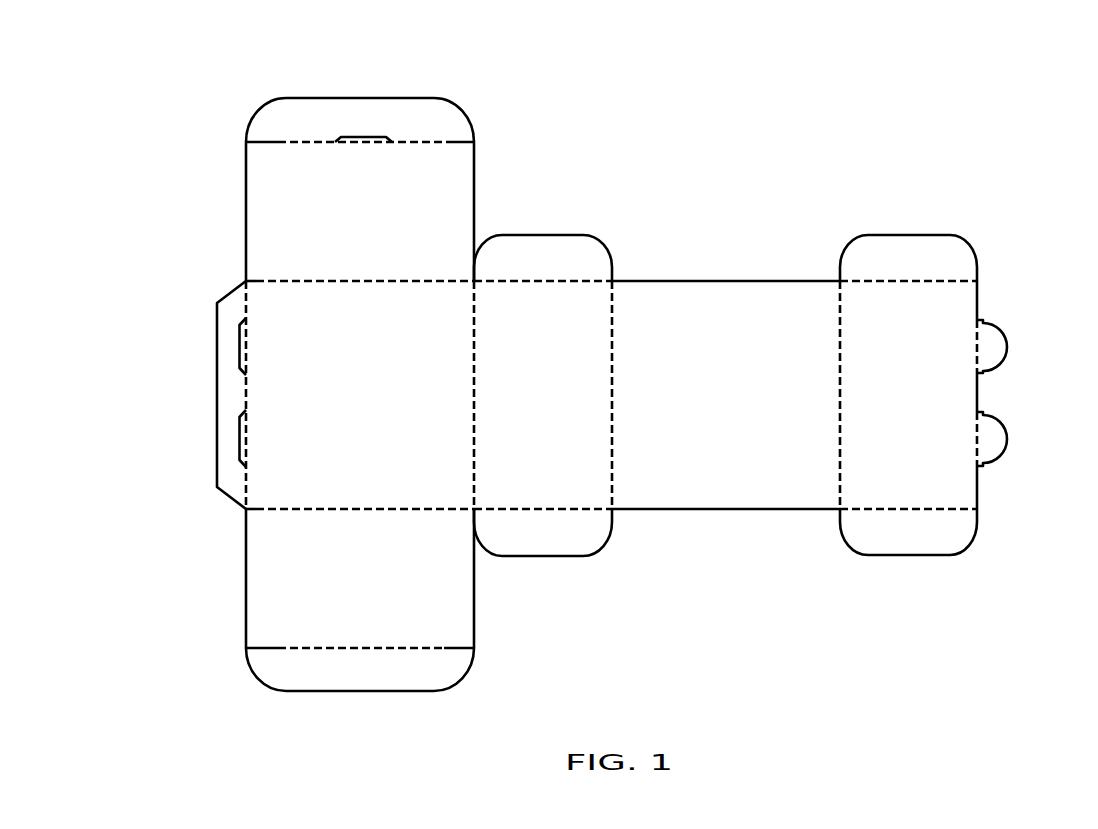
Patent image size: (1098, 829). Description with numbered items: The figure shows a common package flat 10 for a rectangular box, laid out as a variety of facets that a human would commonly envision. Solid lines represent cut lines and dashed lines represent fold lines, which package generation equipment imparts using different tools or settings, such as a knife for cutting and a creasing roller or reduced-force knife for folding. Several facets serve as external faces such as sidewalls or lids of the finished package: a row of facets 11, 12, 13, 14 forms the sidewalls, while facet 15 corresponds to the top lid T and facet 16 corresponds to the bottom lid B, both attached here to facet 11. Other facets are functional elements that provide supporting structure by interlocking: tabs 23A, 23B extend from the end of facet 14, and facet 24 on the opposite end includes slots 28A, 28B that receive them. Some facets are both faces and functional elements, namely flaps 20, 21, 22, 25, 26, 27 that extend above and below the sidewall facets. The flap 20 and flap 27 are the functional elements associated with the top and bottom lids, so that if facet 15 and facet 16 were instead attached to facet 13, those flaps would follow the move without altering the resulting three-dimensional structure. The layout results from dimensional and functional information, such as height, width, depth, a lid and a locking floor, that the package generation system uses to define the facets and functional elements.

The package flat 10 is at (841, 128).
The facet 11 is at (323, 487).
The facet 12 is at (593, 342).
The facet 13 is at (743, 490).
The facet 14 is at (967, 492).
The facet 15 is at (262, 203).
The facet 16 is at (267, 612).
The flap 20 is at (441, 110).
The flap 21 is at (535, 242).
The flap 22 is at (583, 523).
The tab 23A is at (997, 350).
The tab 23B is at (997, 442).
The facet 24 is at (218, 392).
The flap 25 is at (930, 542).
The flap 26 is at (930, 245).
The flap 27 is at (405, 678).
The slot 28A is at (240, 345).
The slot 28B is at (240, 442).